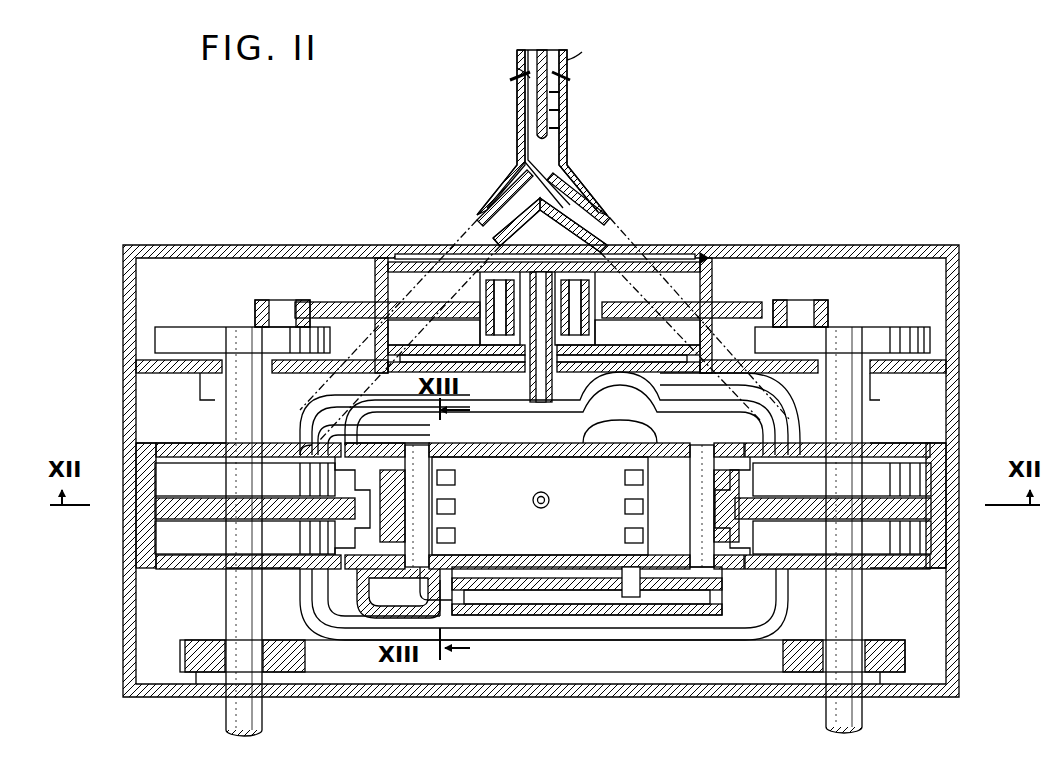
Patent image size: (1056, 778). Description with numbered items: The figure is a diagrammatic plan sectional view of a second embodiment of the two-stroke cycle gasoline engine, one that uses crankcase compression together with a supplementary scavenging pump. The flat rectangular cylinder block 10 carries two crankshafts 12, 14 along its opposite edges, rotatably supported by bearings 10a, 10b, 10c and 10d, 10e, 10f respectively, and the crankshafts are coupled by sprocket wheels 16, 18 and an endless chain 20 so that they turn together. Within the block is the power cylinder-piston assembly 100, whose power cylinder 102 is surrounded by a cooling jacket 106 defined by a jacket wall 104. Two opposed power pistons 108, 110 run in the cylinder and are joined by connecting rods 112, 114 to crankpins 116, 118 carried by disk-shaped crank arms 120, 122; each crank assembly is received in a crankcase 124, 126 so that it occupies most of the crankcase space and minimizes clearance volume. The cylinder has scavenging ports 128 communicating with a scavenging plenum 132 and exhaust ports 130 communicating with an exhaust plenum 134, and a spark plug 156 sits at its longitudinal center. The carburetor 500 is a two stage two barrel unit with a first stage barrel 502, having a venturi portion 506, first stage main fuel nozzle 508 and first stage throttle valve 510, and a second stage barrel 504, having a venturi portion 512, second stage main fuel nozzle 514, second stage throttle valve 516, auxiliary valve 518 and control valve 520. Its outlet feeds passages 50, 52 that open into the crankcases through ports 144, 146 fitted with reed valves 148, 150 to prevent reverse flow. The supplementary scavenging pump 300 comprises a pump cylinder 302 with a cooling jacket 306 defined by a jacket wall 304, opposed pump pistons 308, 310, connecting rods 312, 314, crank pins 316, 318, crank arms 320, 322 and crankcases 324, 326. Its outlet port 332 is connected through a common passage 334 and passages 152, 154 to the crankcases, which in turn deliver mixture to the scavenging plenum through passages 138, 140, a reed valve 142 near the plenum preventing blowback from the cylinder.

The cylinder block 10 is at (205, 258).
The bearing 10a is at (220, 433).
The bearing 10b is at (212, 388).
The bearing 10c is at (222, 686).
The bearing 10d is at (868, 422).
The bearing 10e is at (870, 385).
The bearing 10f is at (872, 686).
The crankshaft 12 is at (262, 714).
The crankshaft 14 is at (826, 714).
The sprocket wheel 16 is at (203, 652).
The sprocket wheel 18 is at (796, 652).
The endless chain 20 is at (736, 648).
The passage 50 is at (505, 200).
The passage 52 is at (575, 195).
The power cylinder-piston assembly 100 is at (582, 625).
The power cylinder 102 is at (505, 462).
The jacket wall 104 is at (518, 580).
The cooling jacket 106 is at (475, 580).
The power piston 108 is at (455, 478).
The power piston 110 is at (625, 508).
The connecting rod 112 is at (226, 500).
The connecting rod 114 is at (806, 502).
The crankpin 116 is at (183, 515).
The crankpin 118 is at (892, 510).
The crank arm 120 is at (160, 541).
The crank arm 122 is at (920, 538).
The crankcase 124 is at (335, 568).
The crankcase 126 is at (760, 568).
The scavenging port 128 is at (455, 507).
The exhaust port 130 is at (625, 478).
The scavenging plenum 132 is at (447, 580).
The exhaust plenum 134 is at (640, 590).
The passage 138 is at (390, 618).
The passage 140 is at (655, 632).
The reed valve 142 is at (432, 620).
The port 144 is at (322, 463).
The port 146 is at (775, 458).
The reed valve 148 is at (322, 395).
The reed valve 150 is at (775, 410).
The passage 152 is at (385, 412).
The passage 154 is at (650, 402).
The spark plug 156 is at (548, 508).
The scavenging pump 300 is at (706, 256).
The pump cylinder 302 is at (590, 300).
The jacket wall 304 is at (635, 256).
The cooling jacket 306 is at (665, 266).
The pump piston 308 is at (486, 300).
The pump piston 310 is at (590, 333).
The connecting rod 312 is at (372, 302).
The connecting rod 314 is at (710, 302).
The crank pin 316 is at (275, 310).
The crank pin 318 is at (795, 305).
The crank arm 320 is at (220, 330).
The crank arm 322 is at (845, 330).
The crankcase 324 is at (145, 282).
The crankcase 326 is at (940, 278).
The outlet port 332 is at (495, 333).
The common passage 334 is at (540, 388).
The carburetor 500 is at (575, 74).
The first stage barrel 502 is at (530, 50).
The second stage barrel 504 is at (551, 50).
The venturi portion 506 is at (518, 68).
The first stage main fuel nozzle 508 is at (510, 80).
The first stage throttle valve 510 is at (535, 107).
The venturi portion 512 is at (565, 62).
The second stage main fuel nozzle 514 is at (570, 80).
The second stage throttle valve 516 is at (562, 110).
The auxiliary valve 518 is at (562, 93).
The control valve 520 is at (562, 128).